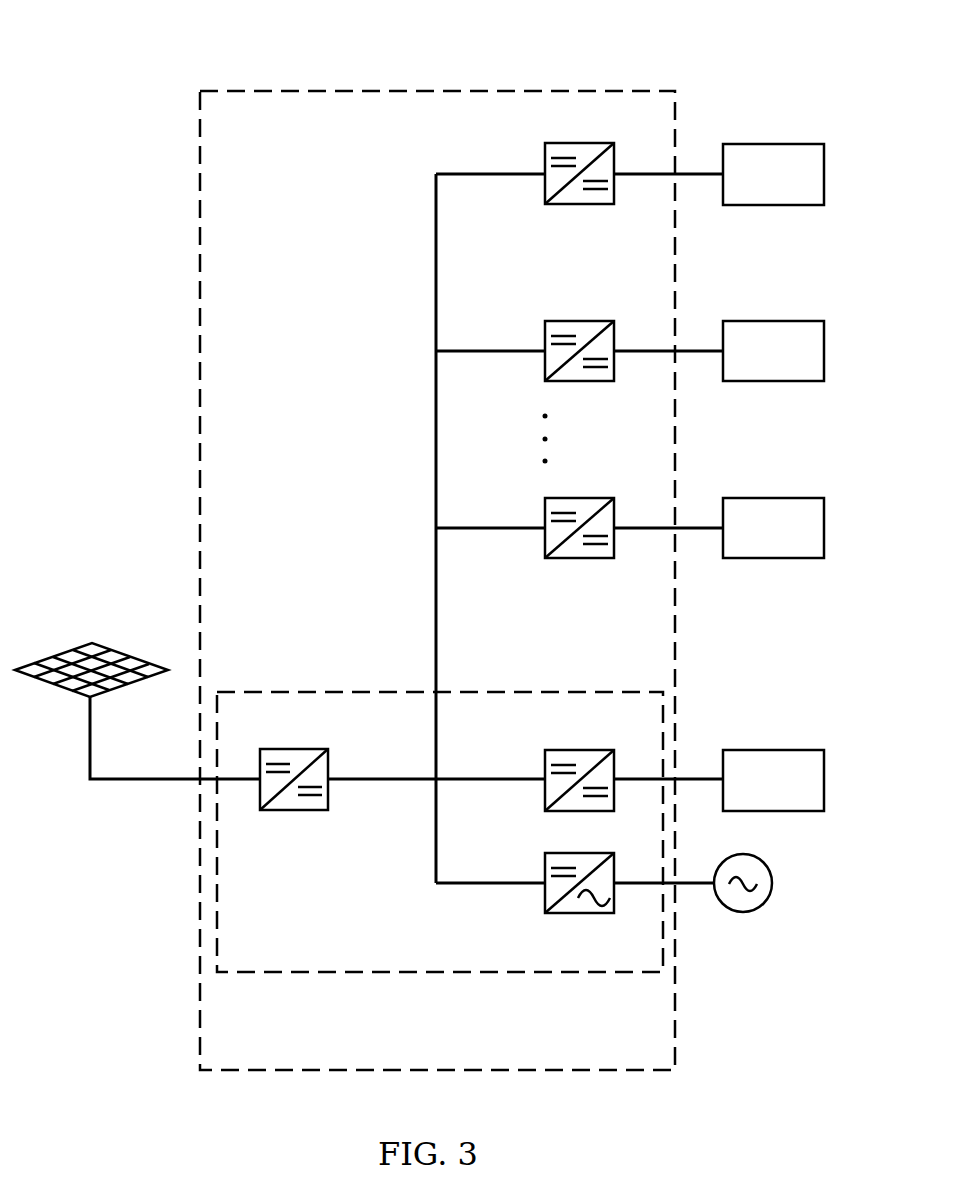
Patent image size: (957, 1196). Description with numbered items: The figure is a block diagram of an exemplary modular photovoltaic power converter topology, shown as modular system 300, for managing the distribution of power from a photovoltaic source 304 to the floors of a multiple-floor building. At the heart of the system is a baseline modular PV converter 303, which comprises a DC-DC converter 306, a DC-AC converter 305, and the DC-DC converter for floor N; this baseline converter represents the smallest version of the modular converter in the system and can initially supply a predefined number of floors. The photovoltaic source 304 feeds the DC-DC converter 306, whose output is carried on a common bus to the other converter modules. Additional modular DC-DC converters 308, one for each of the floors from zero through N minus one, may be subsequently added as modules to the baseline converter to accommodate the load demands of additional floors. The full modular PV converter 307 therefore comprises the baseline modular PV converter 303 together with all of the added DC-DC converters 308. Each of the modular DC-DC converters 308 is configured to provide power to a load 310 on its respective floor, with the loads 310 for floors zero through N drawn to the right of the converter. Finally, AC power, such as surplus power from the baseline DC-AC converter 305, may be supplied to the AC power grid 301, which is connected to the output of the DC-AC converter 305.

The modular system 300 is at (98, 68).
The AC power grid 301 is at (750, 910).
The baseline modular PV converter 303 is at (341, 974).
The photovoltaic source 304 is at (118, 655).
The DC-AC converter 305 is at (587, 914).
The DC-DC converter 306 is at (296, 811).
The modular PV converter 307 is at (200, 1025).
The modular DC-DC converters 308 is at (587, 143).
The loads 310 is at (783, 144).